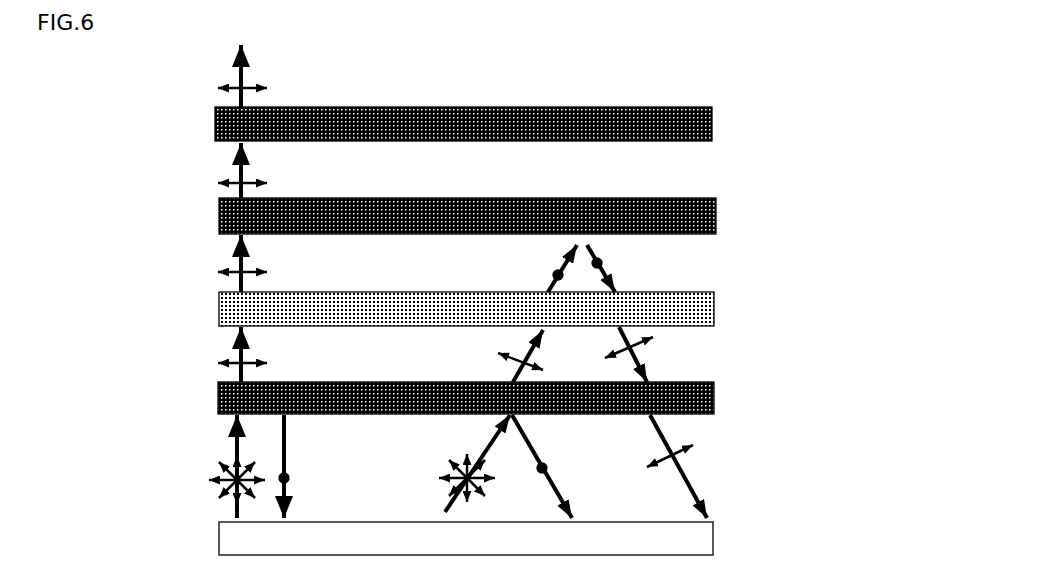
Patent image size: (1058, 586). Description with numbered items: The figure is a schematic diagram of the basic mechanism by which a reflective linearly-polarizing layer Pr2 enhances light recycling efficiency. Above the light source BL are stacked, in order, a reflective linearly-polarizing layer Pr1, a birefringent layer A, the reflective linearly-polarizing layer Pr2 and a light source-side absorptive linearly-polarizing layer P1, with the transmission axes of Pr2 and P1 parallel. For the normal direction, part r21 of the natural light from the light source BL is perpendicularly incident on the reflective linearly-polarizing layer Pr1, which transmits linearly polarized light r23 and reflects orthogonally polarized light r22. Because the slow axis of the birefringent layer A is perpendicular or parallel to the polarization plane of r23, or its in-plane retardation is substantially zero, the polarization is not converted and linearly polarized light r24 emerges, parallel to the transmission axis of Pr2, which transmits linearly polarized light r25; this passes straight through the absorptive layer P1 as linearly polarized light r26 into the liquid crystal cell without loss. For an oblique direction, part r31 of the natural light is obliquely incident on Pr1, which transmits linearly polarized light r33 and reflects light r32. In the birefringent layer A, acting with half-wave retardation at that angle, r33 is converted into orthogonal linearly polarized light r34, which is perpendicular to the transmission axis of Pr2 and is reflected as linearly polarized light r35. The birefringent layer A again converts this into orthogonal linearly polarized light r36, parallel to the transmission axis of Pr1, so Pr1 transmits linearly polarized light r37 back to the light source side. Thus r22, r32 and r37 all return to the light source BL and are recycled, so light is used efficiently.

The light source-side absorptive linearly-polarizing layer P1 is at (712, 123).
The reflective linearly-polarizing layer Pr2 is at (716, 218).
The birefringent layer A is at (714, 308).
The reflective linearly-polarizing layer Pr1 is at (714, 398).
The light source BL is at (713, 537).
The part of natural light r21 is at (206, 466).
The linearly polarized light r22 is at (315, 466).
The linearly polarized light r23 is at (213, 354).
The linearly polarized light r24 is at (213, 263).
The linearly polarized light r25 is at (213, 171).
The linearly polarized light r26 is at (213, 76).
The part of natural light r31 is at (446, 463).
The linearly polarized light r32 is at (561, 466).
The linearly polarized light r33 is at (493, 356).
The linearly polarized light r34 is at (537, 268).
The linearly polarized light r35 is at (630, 268).
The linearly polarized light r36 is at (654, 354).
The linearly polarized light r37 is at (697, 466).